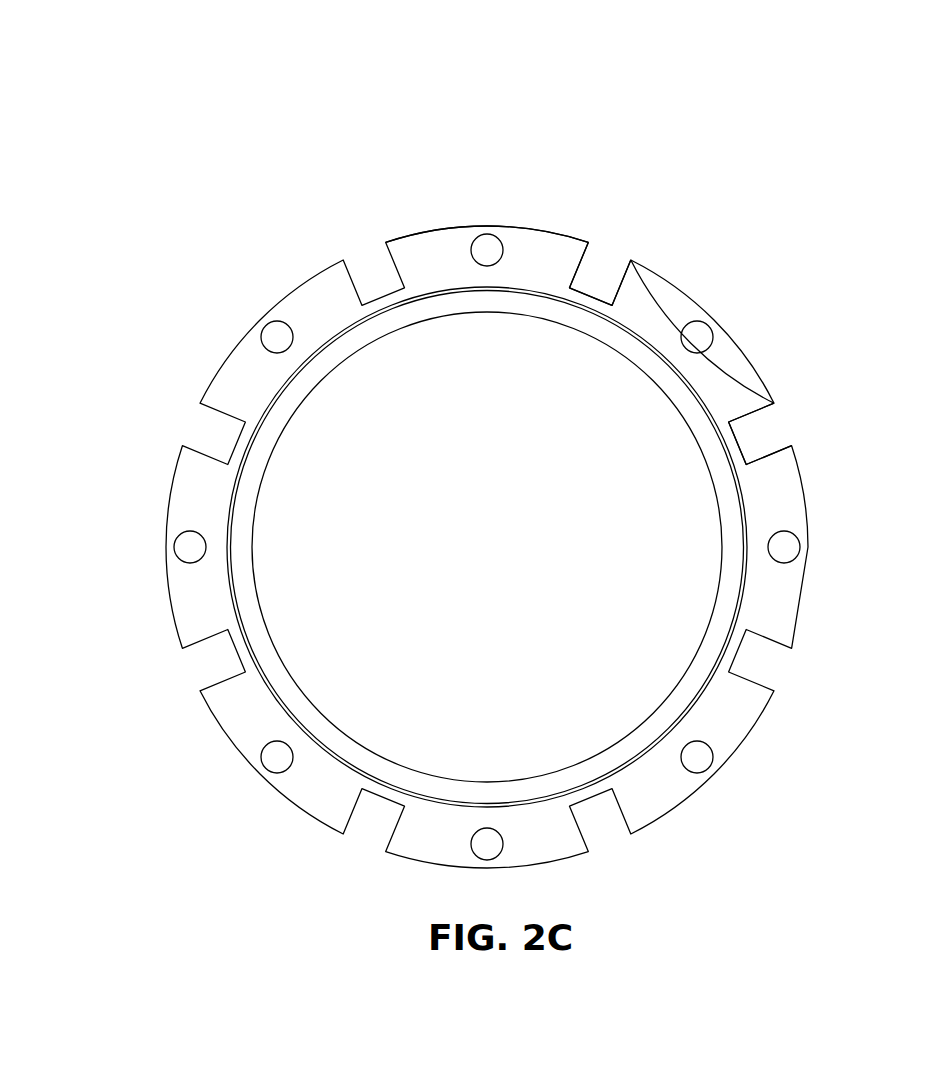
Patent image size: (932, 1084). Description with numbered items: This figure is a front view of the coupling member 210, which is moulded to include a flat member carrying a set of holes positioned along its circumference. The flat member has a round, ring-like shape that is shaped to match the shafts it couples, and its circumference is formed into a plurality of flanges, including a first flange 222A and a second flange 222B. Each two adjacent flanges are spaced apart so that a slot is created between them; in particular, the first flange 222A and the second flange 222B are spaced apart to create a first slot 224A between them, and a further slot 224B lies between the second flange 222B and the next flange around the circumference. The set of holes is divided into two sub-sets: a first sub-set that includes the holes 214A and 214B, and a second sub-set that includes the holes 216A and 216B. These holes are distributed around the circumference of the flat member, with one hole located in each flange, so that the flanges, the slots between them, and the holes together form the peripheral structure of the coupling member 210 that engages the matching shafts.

The coupling member 210 is at (750, 108).
The first flange 222A is at (430, 248).
The second flange 222B is at (732, 372).
The first slot 224A is at (602, 267).
The slot 224B is at (774, 428).
The hole 214A is at (488, 249).
The hole 214B is at (698, 758).
The hole 216A is at (699, 336).
The hole 216B is at (785, 547).